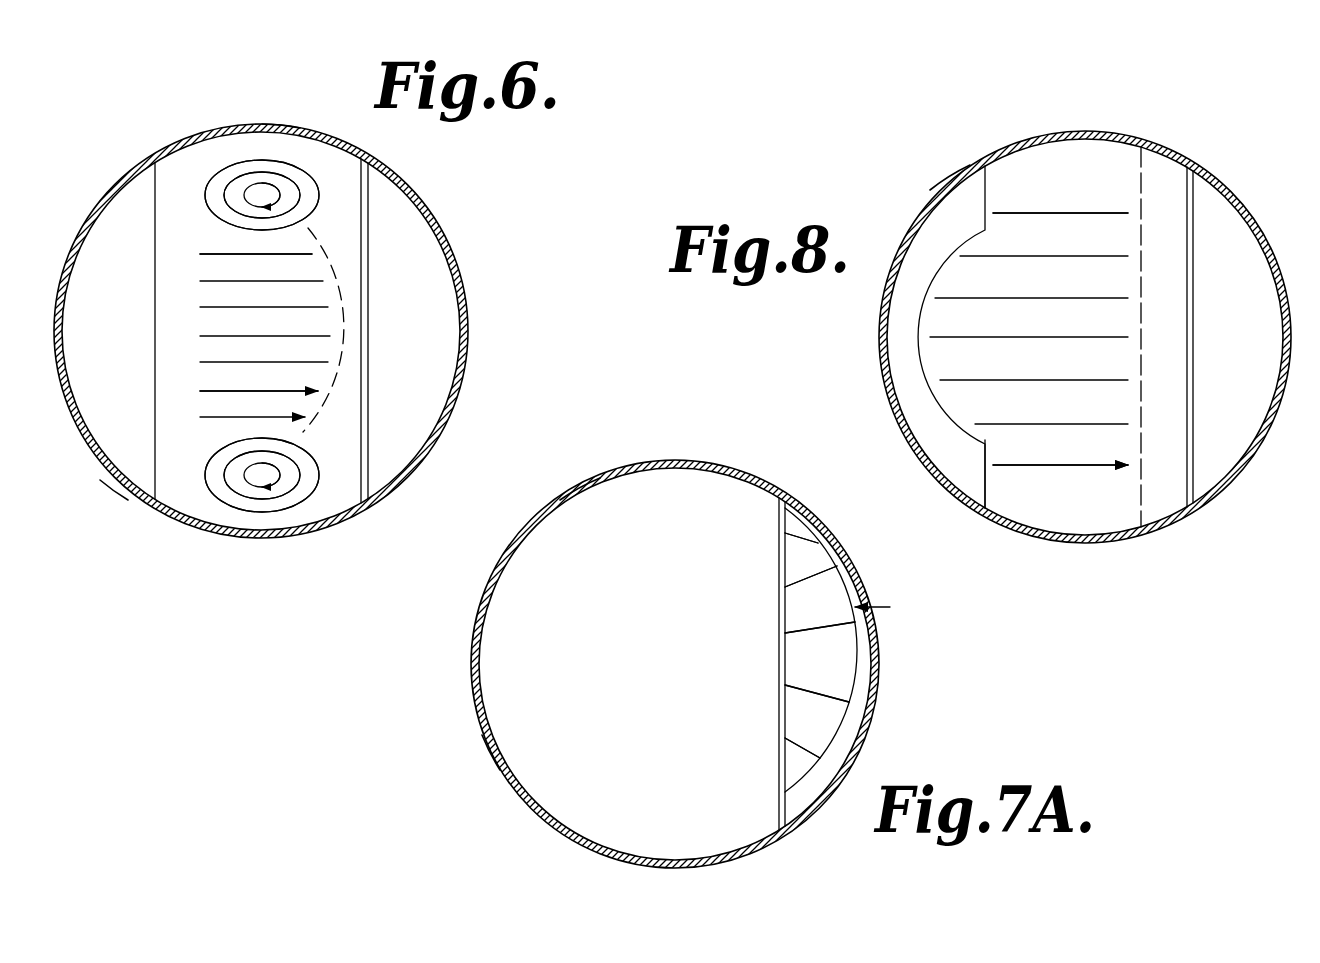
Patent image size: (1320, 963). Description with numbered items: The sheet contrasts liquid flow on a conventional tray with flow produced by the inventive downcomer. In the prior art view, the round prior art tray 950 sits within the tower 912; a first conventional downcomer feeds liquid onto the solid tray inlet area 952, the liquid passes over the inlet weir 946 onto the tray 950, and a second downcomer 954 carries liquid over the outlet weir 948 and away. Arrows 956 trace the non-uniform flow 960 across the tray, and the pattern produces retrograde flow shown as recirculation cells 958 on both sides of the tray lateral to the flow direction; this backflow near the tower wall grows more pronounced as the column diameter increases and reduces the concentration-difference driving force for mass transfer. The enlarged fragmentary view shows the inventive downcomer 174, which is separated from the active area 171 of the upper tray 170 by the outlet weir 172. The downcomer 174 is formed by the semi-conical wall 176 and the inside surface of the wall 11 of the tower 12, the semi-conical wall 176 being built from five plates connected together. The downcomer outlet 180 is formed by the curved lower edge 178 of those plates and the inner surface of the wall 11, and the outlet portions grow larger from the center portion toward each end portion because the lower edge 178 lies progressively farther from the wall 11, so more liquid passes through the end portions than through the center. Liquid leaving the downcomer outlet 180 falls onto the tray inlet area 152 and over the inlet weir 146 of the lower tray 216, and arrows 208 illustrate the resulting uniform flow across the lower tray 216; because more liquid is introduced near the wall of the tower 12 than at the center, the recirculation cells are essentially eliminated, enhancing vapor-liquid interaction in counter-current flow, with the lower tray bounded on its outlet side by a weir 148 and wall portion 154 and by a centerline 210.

In FIG. 6, the tower 912 is at (278, 125).
In FIG. 6, the inlet weir 946 is at (155, 375).
In FIG. 6, the outlet weir 948 is at (370, 276).
In FIG. 6, the prior art tray 950 is at (265, 335).
In FIG. 6, the tray inlet area 952 is at (134, 490).
In FIG. 6, the second downcomer 954 is at (442, 285).
In FIG. 6, the flow streamlines 956 is at (230, 281).
In FIG. 6, the recirculation cells 958 is at (255, 196).
In FIG. 6, the non-uniform flow 960 is at (322, 258).
In FIG. 7A, the wall 11 is at (580, 482).
In FIG. 8, the tower 12 is at (952, 183).
In FIG. 7A, the tower 12 is at (495, 758).
In FIG. 8, the inlet weir 146 is at (985, 472).
In FIG. 8, the outlet screen 148 is at (1194, 292).
In FIG. 8, the tray inlet area 152 is at (902, 349).
In FIG. 8, the conduit wall 154 is at (1262, 404).
In FIG. 7A, the upper tray 170 is at (682, 466).
In FIG. 7A, the active area 171 is at (655, 625).
In FIG. 7A, the outlet weir 172 is at (779, 512).
In FIG. 7A, the downcomer 174 is at (832, 600).
In FIG. 7A, the semi-conical wall 176 is at (796, 658).
In FIG. 7A, the curved lower edge 178 is at (892, 607).
In FIG. 7A, the downcomer outlet 180 is at (830, 757).
In FIG. 8, the arrows 208 is at (1064, 212).
In FIG. 8, the centerline 210 is at (1141, 172).
In FIG. 8, the lower tray 216 is at (1029, 339).